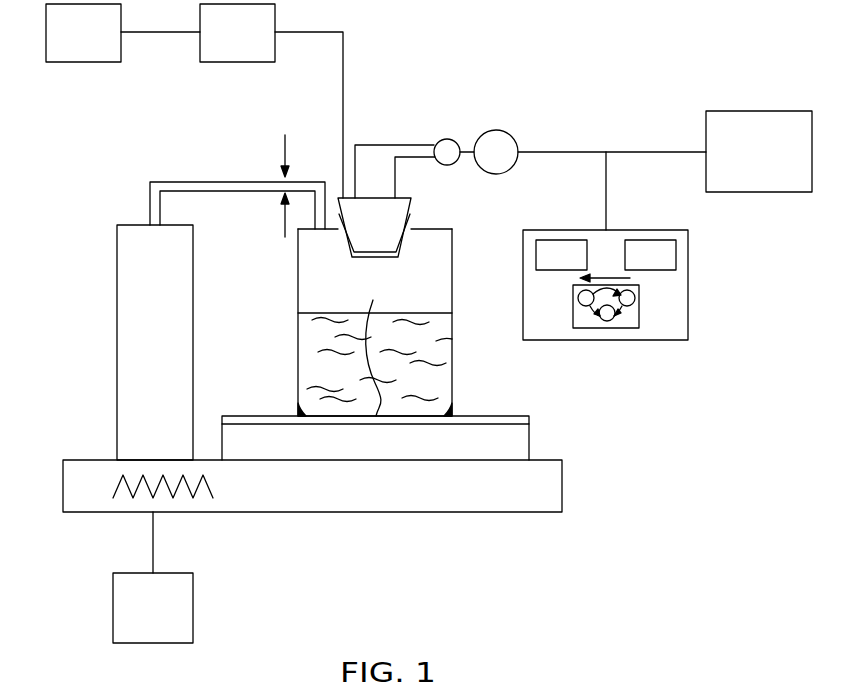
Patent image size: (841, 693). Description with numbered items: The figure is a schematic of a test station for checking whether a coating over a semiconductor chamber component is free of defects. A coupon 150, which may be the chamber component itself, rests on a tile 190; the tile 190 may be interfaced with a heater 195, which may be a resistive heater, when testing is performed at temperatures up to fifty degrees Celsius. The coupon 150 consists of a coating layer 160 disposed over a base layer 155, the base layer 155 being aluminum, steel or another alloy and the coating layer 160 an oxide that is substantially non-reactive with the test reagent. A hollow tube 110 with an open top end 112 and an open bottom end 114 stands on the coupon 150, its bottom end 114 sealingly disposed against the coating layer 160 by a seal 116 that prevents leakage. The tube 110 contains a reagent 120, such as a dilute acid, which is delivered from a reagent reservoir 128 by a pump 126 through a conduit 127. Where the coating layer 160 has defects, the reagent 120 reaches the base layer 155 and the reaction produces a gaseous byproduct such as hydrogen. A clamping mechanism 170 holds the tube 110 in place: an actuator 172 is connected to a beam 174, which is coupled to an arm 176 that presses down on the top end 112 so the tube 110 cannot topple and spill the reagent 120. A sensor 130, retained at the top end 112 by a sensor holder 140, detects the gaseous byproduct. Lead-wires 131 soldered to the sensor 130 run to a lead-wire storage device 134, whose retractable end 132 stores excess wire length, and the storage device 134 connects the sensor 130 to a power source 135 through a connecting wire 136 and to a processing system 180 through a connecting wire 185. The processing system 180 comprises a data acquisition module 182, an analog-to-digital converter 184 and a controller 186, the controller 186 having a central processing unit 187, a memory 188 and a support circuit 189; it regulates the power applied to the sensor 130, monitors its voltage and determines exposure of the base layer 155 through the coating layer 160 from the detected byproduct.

The hollow tube 110 is at (466, 298).
The top end 112 is at (432, 228).
The bottom end 114 is at (375, 344).
The seal 116 is at (298, 408).
The reagent 120 is at (322, 350).
The pump 126 is at (254, 45).
The conduit 127 is at (343, 90).
The reagent reservoir 128 is at (100, 45).
The sensor 130 is at (378, 205).
The lead-wires 131 is at (418, 145).
The retractable end 132 is at (448, 139).
The lead-wire storage device 134 is at (512, 133).
The power source 135 is at (776, 164).
The connecting wire 136 is at (655, 150).
The sensor holder 140 is at (410, 212).
The coupon 150 is at (449, 434).
The base layer 155 is at (605, 410).
The coating layer 160 is at (527, 422).
The clamping mechanism 170 is at (105, 328).
The actuator 172 is at (142, 333).
The beam 174 is at (149, 189).
The arm 176 is at (226, 190).
The processing system 180 is at (642, 318).
The data acquisition module 182 is at (579, 267).
The analog-to-digital converter 184 is at (668, 267).
The connecting wire 185 is at (606, 205).
The controller 186 is at (640, 308).
The central processing unit 187 is at (578, 300).
The memory 188 is at (609, 321).
The support circuit 189 is at (624, 306).
The tile 190 is at (543, 480).
The heater 195 is at (170, 620).